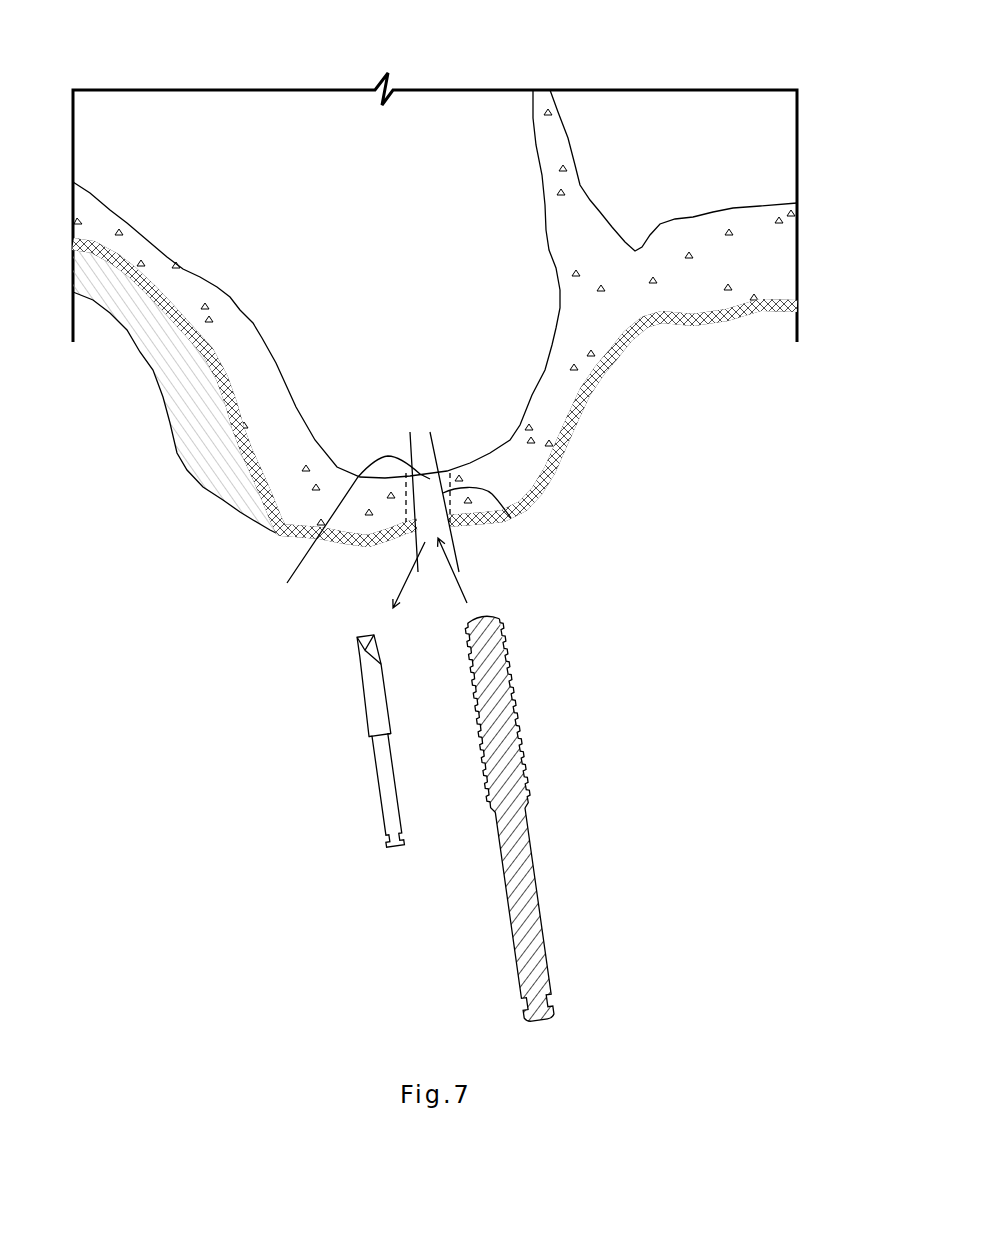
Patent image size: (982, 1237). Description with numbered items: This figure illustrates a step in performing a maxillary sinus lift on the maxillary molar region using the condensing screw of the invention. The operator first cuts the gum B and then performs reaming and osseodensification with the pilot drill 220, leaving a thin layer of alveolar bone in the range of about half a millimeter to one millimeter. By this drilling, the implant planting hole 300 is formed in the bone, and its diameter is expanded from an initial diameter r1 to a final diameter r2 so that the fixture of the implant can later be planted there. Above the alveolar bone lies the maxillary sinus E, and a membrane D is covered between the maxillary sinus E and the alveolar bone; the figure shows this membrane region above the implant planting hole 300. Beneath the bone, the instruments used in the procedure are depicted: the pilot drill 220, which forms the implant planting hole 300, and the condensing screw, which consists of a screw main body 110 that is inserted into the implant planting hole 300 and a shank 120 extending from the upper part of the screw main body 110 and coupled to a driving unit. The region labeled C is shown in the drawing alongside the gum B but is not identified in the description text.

The maxillary sinus E is at (289, 189).
The gum B is at (585, 398).
The cancellous bone C is at (543, 422).
The membrane D is at (344, 533).
The implant planting hole 300 is at (513, 522).
The initial diameter r1 is at (430, 438).
The final diameter r2 is at (460, 572).
The pilot drill 220 is at (375, 697).
The screw main body 110 is at (512, 675).
The shank 120 is at (530, 872).